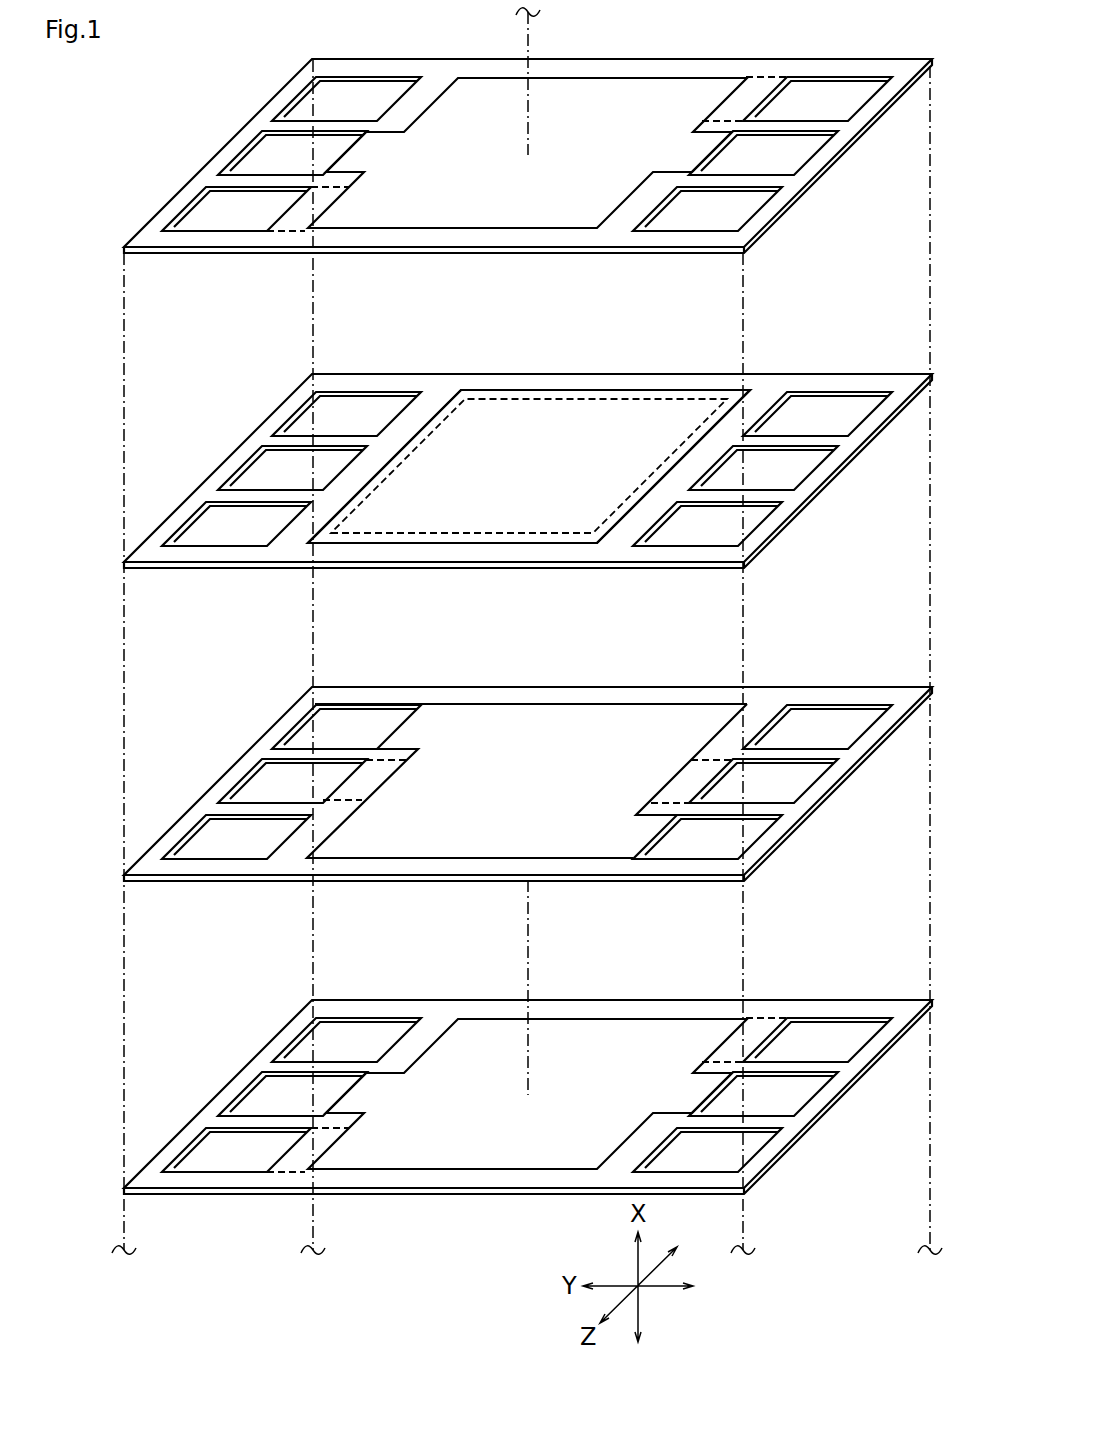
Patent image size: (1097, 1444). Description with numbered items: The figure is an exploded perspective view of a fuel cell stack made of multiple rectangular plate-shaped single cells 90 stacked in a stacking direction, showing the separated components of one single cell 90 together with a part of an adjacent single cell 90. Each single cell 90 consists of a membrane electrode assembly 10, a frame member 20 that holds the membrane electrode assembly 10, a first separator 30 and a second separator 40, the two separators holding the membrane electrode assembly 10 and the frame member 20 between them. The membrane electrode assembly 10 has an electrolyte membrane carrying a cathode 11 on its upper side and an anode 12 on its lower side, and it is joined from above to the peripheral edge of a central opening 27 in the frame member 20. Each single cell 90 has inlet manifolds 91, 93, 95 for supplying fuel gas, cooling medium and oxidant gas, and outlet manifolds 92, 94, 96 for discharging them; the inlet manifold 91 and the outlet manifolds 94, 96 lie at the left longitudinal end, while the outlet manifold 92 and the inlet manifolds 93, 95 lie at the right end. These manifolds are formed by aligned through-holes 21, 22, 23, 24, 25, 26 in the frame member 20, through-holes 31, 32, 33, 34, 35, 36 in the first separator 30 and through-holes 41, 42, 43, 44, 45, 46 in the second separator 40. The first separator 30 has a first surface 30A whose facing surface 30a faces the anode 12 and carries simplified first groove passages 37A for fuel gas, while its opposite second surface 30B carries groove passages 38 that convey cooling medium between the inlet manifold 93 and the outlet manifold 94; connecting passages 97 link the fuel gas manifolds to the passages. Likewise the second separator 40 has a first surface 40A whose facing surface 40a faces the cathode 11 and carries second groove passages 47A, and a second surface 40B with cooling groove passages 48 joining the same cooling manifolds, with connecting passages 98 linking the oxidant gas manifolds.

The membrane electrode assembly 10 is at (683, 376).
The cathode 11 is at (535, 462).
The anode 12 is at (522, 525).
The frame member 20 is at (771, 362).
The through-hole 21 is at (340, 400).
The through-hole 22 is at (765, 525).
The through-hole 23 is at (815, 462).
The through-hole 24 is at (240, 467).
The through-hole 25 is at (852, 408).
The through-hole 26 is at (190, 522).
The opening 27 is at (451, 432).
The first separator 30 is at (773, 676).
The first surface 30A is at (610, 690).
The second surface 30B is at (463, 866).
The facing surface 30a is at (514, 772).
The through-hole 31 is at (345, 710).
The through-hole 32 is at (765, 838).
The through-hole 33 is at (815, 775).
The through-hole 34 is at (240, 780).
The through-hole 35 is at (852, 723).
The through-hole 36 is at (190, 835).
The first groove passages 37A is at (679, 693).
The groove passages 38 is at (345, 803).
The second separator 40 is at (795, 47).
The first surface 40A is at (476, 237).
The second surface 40B is at (632, 68).
The facing surface 40a is at (528, 155).
The through-hole 41 is at (346, 536).
The through-hole 42 is at (735, 704).
The through-hole 43 is at (793, 649).
The through-hole 44 is at (281, 590).
The through-hole 45 is at (841, 538).
The through-hole 46 is at (220, 646).
The second groove passages 47A is at (371, 242).
The groove passages 48 is at (474, 66).
The single cell 90 is at (112, 240).
The inlet manifold 91 is at (307, 94).
The outlet manifold 92 is at (765, 213).
The inlet manifold 93 is at (815, 152).
The outlet manifold 94 is at (240, 152).
The inlet manifold 95 is at (858, 87).
The outlet manifold 96 is at (190, 207).
The connecting passages 97 is at (406, 759).
The connecting passages 98 is at (761, 73).